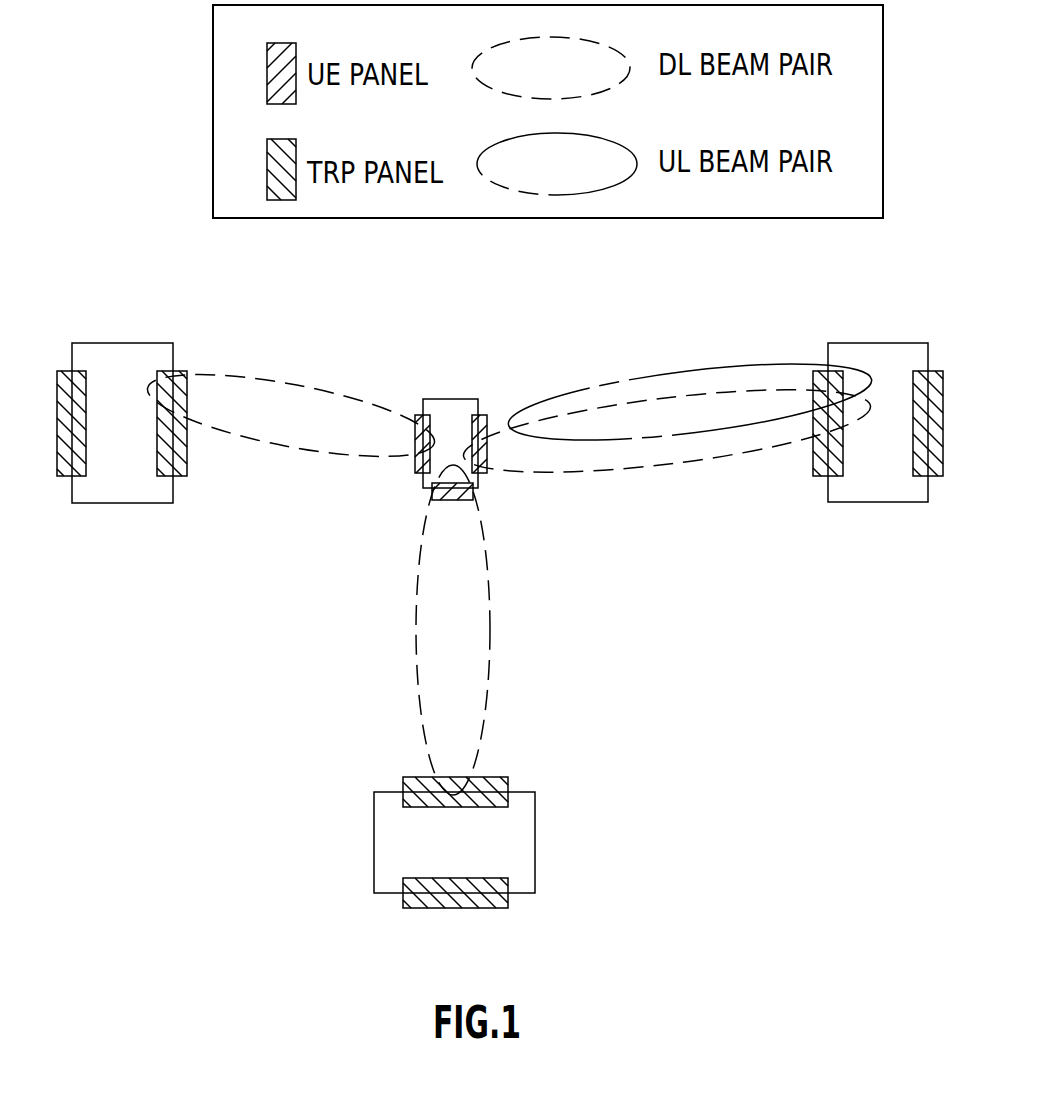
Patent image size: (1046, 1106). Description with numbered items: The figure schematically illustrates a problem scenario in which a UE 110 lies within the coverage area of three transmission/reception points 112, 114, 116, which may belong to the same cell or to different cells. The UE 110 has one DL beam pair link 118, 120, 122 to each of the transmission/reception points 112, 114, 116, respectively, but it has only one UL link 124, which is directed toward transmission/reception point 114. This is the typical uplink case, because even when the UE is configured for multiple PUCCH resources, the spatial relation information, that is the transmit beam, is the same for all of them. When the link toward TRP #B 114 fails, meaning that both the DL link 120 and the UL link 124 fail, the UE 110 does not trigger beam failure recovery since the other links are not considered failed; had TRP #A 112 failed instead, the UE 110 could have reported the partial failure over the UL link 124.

The UE 110 is at (427, 483).
The transmission/reception point 112 is at (102, 503).
The transmission/reception point 114 is at (898, 502).
The transmission/reception point 116 is at (374, 828).
The DL beam pair link 118 is at (298, 387).
The DL beam pair link 120 is at (618, 408).
The DL beam pair link 122 is at (420, 707).
The UL link 124 is at (693, 428).